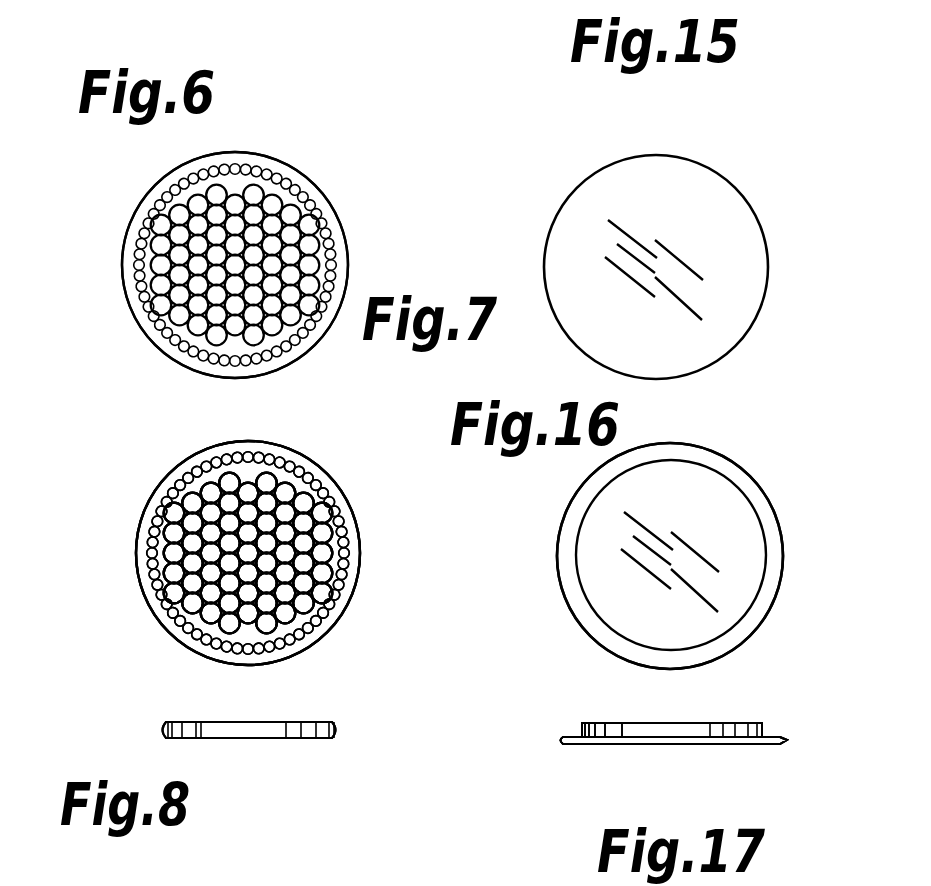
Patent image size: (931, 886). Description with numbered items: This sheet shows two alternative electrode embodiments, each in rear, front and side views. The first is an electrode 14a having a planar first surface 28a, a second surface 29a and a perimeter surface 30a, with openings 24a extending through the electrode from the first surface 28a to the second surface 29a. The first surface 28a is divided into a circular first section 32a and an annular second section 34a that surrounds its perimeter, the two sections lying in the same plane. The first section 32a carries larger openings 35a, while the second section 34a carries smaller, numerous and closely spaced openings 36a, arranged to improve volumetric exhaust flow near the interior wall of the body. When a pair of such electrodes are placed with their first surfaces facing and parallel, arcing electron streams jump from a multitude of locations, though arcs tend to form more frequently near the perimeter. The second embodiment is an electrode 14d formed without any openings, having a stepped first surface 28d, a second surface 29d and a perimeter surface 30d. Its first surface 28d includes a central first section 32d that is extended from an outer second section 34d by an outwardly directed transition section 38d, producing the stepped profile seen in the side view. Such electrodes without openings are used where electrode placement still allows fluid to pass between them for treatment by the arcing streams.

In FIG. 6, the electrode 14a is at (284, 165).
In FIG. 7, the electrode 14a is at (334, 482).
In FIG. 8, the electrode 14a is at (283, 720).
In FIG. 6, the openings 24a is at (192, 288).
In FIG. 7, the openings 24a is at (283, 490).
In FIG. 7, the first surface 28a is at (317, 595).
In FIG. 8, the first surface 28a is at (203, 720).
In FIG. 6, the second surface 29a is at (302, 222).
In FIG. 8, the second surface 29a is at (233, 740).
In FIG. 6, the perimeter surface 30a is at (176, 362).
In FIG. 7, the perimeter surface 30a is at (157, 610).
In FIG. 8, the perimeter surface 30a is at (338, 731).
In FIG. 7, the first section 32a is at (337, 535).
In FIG. 7, the second section 34a is at (330, 627).
In FIG. 7, the openings 35a is at (186, 526).
In FIG. 7, the openings 36a is at (153, 594).
In FIG. 15, the electrode 14d is at (755, 212).
In FIG. 16, the electrode 14d is at (768, 493).
In FIG. 17, the electrode 14d is at (620, 744).
In FIG. 16, the first surface 28d is at (677, 483).
In FIG. 17, the first surface 28d is at (620, 725).
In FIG. 15, the second surface 29d is at (712, 168).
In FIG. 17, the second surface 29d is at (708, 744).
In FIG. 17, the perimeter surface 30d is at (786, 739).
In FIG. 16, the first section 32d is at (753, 550).
In FIG. 17, the first section 32d is at (700, 723).
In FIG. 16, the second section 34d is at (768, 585).
In FIG. 17, the second section 34d is at (763, 732).
In FIG. 17, the transition section 38d is at (582, 730).